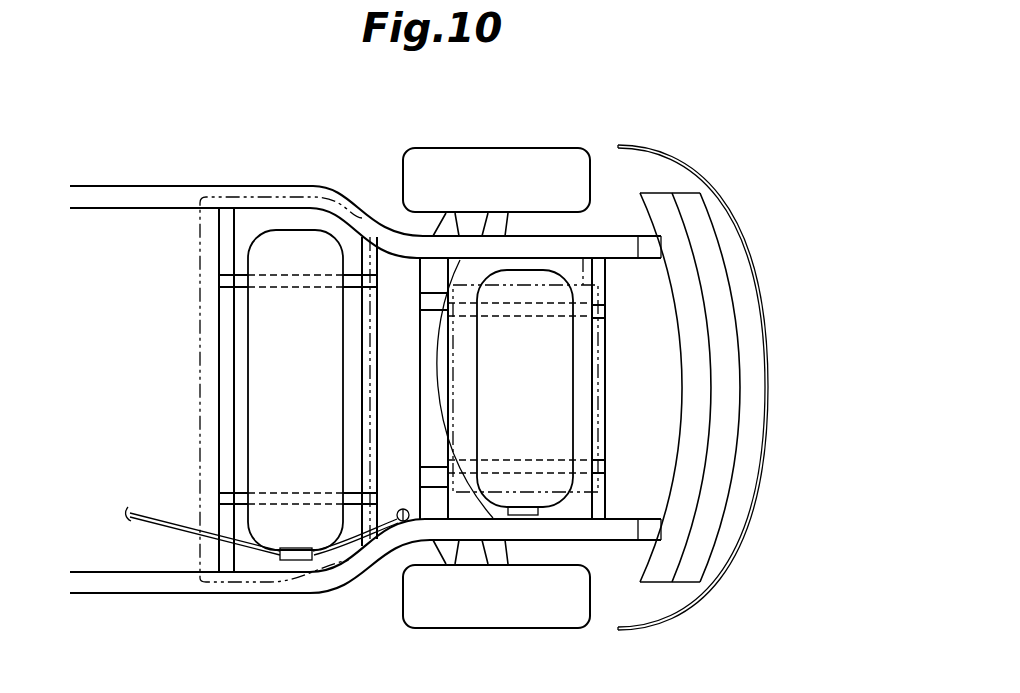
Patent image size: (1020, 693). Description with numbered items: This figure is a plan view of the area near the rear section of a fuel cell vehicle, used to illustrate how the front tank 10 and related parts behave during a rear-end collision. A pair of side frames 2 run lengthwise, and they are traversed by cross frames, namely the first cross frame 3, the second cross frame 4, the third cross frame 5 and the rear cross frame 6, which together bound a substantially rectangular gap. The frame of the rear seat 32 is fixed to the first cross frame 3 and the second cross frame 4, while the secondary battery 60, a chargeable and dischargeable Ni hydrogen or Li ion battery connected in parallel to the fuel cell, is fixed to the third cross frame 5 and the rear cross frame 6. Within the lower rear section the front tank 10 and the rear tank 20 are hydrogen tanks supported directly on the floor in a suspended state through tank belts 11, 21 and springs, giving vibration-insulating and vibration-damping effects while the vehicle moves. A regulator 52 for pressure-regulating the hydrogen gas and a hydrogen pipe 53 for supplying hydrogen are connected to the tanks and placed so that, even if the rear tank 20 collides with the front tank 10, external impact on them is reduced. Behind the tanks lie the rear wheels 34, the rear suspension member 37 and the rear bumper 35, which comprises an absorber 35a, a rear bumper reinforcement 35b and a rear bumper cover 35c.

The side frame 2 is at (617, 245).
The first cross frame 3 is at (224, 228).
The second cross frame 4 is at (375, 398).
The third cross frame 5 is at (460, 262).
The rear cross frame 6 is at (600, 395).
The front tank 10 is at (262, 413).
The tank belt 11 is at (237, 283).
The rear tank 20 is at (555, 443).
The tank belt 21 is at (468, 313).
The rear seat 32 is at (200, 377).
The rear wheel 34 is at (508, 168).
The rear bumper 35 is at (742, 387).
The absorber 35a is at (712, 273).
The rear bumper reinforcement 35b is at (688, 482).
The rear bumper cover 35c is at (767, 330).
The rear suspension member 37 is at (458, 537).
The regulator 52 is at (403, 523).
The hydrogen pipe 53 is at (173, 530).
The secondary battery 60 is at (583, 258).